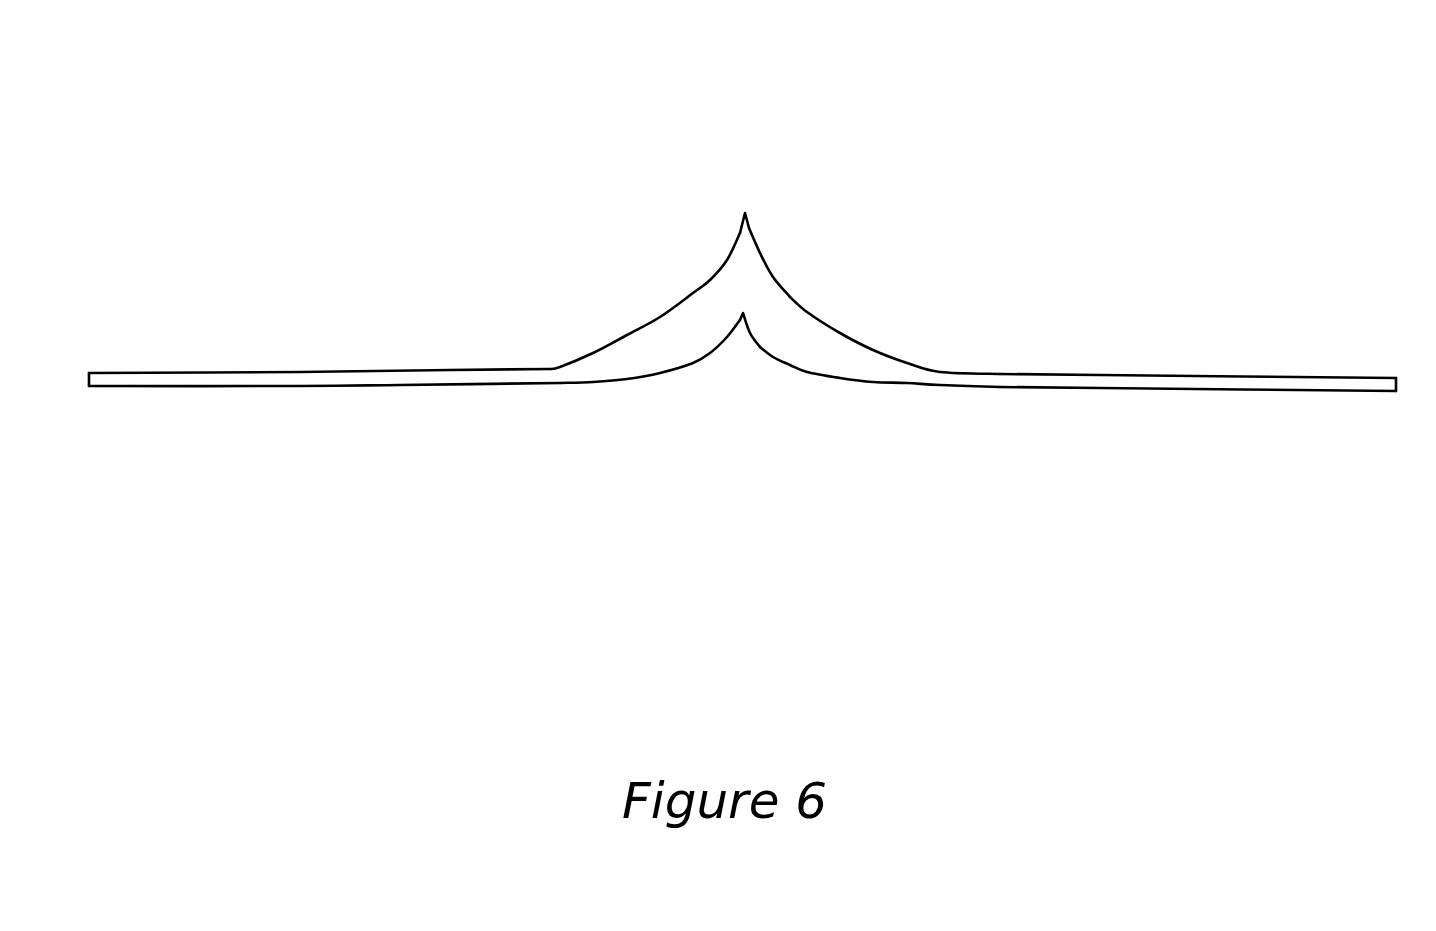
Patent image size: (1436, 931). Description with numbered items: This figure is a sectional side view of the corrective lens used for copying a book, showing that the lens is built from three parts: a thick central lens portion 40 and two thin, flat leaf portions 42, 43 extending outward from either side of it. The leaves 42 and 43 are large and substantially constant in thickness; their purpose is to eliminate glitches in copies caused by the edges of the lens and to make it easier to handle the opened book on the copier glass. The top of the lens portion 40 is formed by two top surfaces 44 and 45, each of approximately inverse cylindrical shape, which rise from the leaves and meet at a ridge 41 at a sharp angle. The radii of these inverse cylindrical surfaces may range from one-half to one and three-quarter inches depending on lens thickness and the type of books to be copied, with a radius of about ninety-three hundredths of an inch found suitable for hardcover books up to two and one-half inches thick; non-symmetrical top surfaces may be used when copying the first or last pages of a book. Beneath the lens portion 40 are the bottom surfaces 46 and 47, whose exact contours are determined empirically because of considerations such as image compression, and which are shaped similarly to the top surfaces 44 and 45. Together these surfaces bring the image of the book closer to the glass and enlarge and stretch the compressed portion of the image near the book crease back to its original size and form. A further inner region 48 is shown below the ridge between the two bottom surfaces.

The lens portion 40 is at (747, 287).
The ridge 41 is at (747, 225).
The leaf portion 42 is at (190, 373).
The leaf portion 43 is at (1152, 376).
The top surface 44 is at (710, 280).
The top surface 45 is at (823, 320).
The bottom surface 46 is at (693, 367).
The bottom surface 47 is at (790, 367).
The inner apex cavity 48 is at (745, 325).